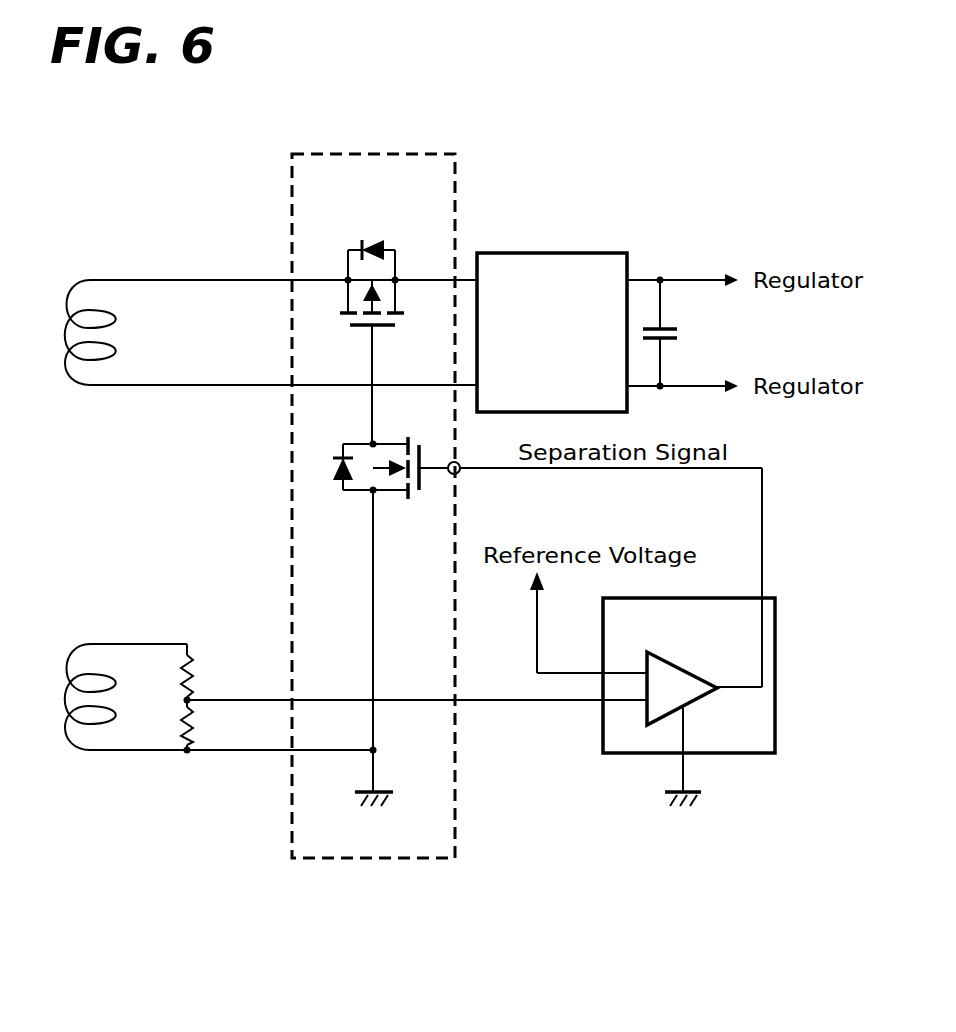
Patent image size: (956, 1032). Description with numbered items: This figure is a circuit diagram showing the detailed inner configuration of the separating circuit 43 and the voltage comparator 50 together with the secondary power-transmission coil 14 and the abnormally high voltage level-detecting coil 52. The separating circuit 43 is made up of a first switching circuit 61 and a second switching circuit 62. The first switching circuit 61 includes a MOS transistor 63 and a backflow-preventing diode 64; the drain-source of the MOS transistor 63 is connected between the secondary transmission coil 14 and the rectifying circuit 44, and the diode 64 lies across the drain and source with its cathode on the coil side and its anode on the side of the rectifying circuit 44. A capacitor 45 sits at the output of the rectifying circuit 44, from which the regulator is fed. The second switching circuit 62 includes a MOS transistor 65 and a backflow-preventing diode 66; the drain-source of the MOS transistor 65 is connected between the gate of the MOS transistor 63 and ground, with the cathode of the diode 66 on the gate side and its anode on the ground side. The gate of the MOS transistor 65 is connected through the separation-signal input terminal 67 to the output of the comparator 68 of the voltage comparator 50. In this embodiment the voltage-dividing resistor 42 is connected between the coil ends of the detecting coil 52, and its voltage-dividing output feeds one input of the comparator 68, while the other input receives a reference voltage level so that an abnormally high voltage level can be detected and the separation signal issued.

The secondary power-transmission coil 14 is at (80, 280).
The separating circuit 43 is at (352, 152).
The first switching circuit 61 is at (324, 270).
The backflow-preventing diode 64 is at (372, 247).
The MOS transistor 63 is at (392, 330).
The rectifying circuit 44 is at (563, 253).
The capacitor 45 is at (700, 330).
The second switching circuit 62 is at (334, 496).
The backflow-preventing diode 66 is at (335, 458).
The MOS transistor 65 is at (425, 480).
The separation-signal input terminal 67 is at (461, 474).
The voltage comparator 50 is at (727, 706).
The comparator 68 is at (697, 700).
The voltage-dividing resistor 42 is at (212, 671).
The abnormally high voltage level-detecting coil 52 is at (107, 752).